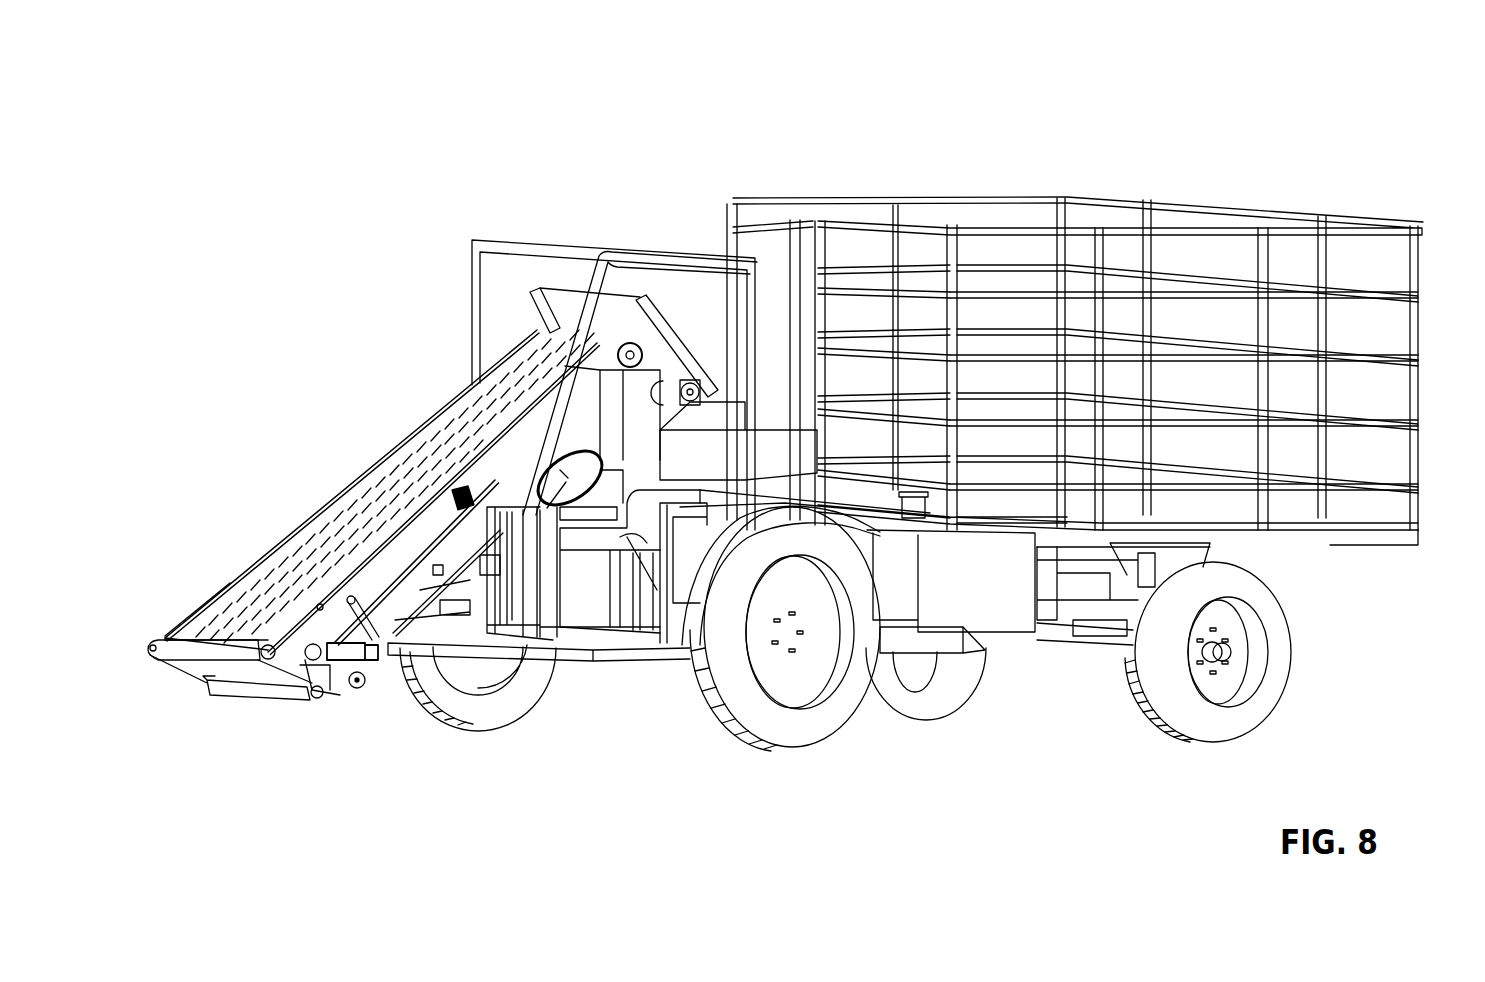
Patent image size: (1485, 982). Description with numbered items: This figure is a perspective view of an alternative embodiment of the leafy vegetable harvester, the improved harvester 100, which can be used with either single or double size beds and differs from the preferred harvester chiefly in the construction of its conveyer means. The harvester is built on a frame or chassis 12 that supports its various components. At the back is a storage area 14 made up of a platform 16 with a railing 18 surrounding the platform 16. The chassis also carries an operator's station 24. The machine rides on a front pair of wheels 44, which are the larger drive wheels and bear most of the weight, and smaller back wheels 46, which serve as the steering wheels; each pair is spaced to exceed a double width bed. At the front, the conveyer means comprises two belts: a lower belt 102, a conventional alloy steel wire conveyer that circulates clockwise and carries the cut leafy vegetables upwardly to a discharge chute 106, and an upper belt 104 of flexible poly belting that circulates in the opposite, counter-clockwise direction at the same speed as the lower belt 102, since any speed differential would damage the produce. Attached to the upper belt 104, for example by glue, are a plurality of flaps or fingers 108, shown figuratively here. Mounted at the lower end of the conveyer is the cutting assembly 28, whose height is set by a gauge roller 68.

The improved harvester 100 is at (1357, 150).
The frame or chassis 12 is at (1356, 531).
The storage area 14 is at (1436, 348).
The platform 16 is at (1228, 510).
The railing 18 is at (1419, 246).
The operator's station 24 is at (681, 491).
The cutting assembly 28 is at (280, 703).
The front wheels 44 is at (525, 713).
The back wheels 46 is at (1293, 658).
The gauge roller 68 is at (372, 701).
The lower belt 102 is at (207, 688).
The upper belt 104 is at (311, 504).
The discharge chute 106 is at (672, 333).
The flaps or fingers 108 is at (238, 580).